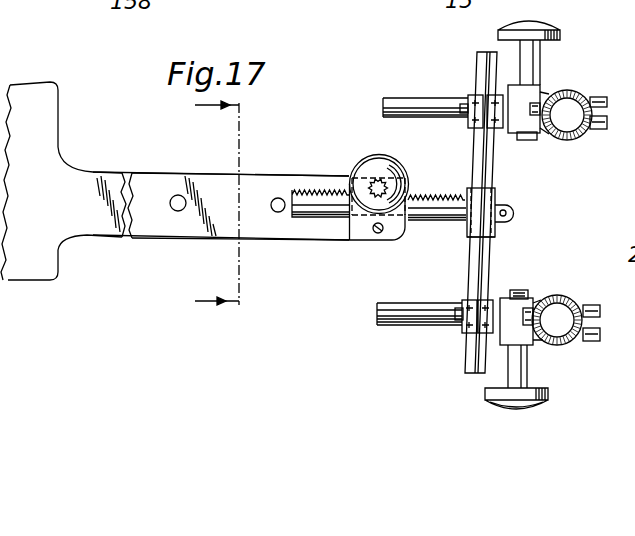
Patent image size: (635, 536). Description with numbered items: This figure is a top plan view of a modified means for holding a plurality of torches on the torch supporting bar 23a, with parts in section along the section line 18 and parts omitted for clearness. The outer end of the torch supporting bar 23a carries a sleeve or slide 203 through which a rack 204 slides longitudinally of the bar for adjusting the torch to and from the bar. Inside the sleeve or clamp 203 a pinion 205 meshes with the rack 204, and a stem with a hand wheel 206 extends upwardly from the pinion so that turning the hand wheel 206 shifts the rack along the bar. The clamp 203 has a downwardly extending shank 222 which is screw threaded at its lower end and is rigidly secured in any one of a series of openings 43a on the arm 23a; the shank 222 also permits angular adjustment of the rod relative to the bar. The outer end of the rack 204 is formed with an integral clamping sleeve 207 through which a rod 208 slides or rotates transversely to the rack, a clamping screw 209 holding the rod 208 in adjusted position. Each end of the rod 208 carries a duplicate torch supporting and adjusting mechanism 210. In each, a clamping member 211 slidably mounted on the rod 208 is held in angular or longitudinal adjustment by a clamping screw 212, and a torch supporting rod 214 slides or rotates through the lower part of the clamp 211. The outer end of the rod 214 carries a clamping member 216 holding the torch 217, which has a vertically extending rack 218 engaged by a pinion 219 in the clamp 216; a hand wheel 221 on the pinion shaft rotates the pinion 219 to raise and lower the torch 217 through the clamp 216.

The section line 18- 18 is at (201, 204).
The torch supporting bar 23a is at (275, 156).
The openings 43a is at (273, 210).
The sleeve or slide 203 is at (353, 223).
The rack 204 is at (302, 212).
The pinion 205 is at (376, 185).
The hand wheel 206 is at (397, 168).
The clamping sleeve 207 is at (495, 193).
The rod 208 is at (488, 247).
The clamping screw 209 is at (512, 213).
The torch supporting and adjusting mechanism 210 is at (466, 88).
The clamping member 211 is at (470, 100).
The clamping screw 212 is at (452, 327).
The torch supporting rod 214 is at (390, 98).
The clamping member 216 is at (586, 136).
The torch 217 is at (573, 93).
The vertically extending rack 218 is at (533, 297).
The pinion 219 is at (503, 297).
The hand wheel 221 is at (558, 25).
The shank 222 is at (362, 222).